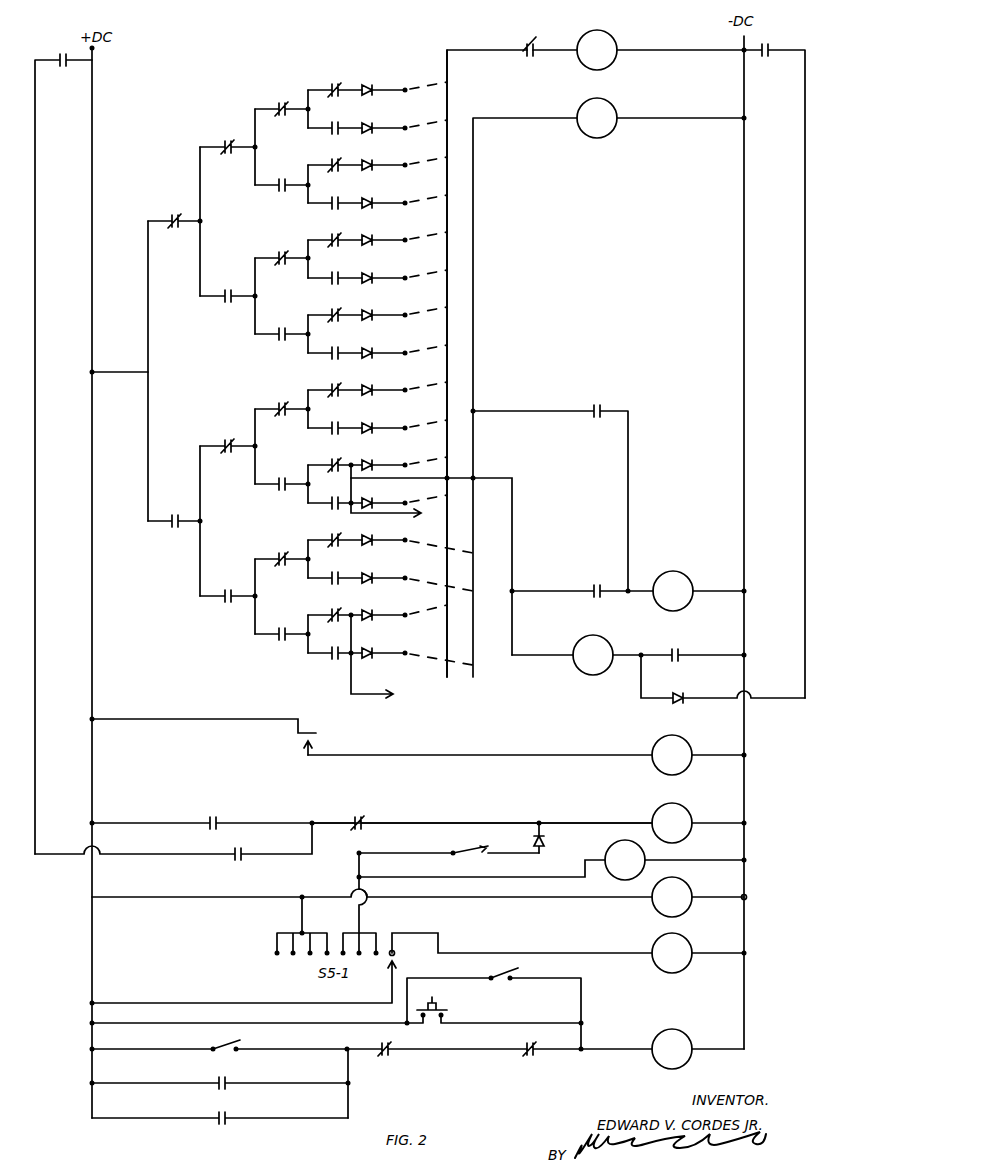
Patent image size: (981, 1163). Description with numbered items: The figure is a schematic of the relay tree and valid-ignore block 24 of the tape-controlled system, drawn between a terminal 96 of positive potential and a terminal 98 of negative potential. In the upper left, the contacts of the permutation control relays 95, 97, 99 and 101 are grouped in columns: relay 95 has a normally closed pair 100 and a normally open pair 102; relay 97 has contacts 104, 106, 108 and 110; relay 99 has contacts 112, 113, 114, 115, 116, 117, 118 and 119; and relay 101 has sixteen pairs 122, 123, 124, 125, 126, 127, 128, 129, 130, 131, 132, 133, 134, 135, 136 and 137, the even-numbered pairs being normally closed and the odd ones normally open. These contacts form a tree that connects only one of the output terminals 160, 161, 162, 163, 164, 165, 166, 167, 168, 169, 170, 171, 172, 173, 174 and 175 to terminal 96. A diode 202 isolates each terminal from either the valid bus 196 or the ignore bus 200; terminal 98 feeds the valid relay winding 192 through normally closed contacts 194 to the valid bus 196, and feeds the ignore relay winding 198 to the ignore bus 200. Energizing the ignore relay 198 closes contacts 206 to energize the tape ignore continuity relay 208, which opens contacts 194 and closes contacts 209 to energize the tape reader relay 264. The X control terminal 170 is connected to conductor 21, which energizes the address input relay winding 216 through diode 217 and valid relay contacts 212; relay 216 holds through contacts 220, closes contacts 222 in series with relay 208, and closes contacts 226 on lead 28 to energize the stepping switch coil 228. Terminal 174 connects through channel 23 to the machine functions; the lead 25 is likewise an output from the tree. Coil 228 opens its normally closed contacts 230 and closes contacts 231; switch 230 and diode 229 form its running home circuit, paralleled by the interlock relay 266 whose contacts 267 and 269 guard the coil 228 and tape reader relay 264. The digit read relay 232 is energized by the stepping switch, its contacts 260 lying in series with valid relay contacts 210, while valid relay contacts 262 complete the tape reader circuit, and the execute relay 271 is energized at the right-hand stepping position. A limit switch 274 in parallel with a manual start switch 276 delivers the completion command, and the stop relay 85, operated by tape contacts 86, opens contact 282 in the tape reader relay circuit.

The conductor 21 is at (514, 530).
The channel 23 is at (370, 698).
The valid-ignore block 24 is at (429, 41).
The output lead 25 is at (405, 518).
The lead 28 is at (428, 822).
The stop relay 85 is at (527, 755).
The switch contacts 86 is at (296, 740).
The permutation control relay 95 is at (176, 171).
The terminal 96 is at (94, 48).
The permutation control relay 97 is at (230, 103).
The terminal 98 is at (742, 42).
The permutation control relay 99 is at (284, 71).
The normally closed contacts 100 is at (174, 213).
The permutation control relay 101 is at (339, 45).
The normally open contacts 102 is at (174, 513).
The normally closed contacts 104 is at (227, 174).
The normally open contacts 106 is at (227, 288).
The normally closed contacts 108 is at (227, 474).
The normally open contacts 110 is at (227, 588).
The normally closed contacts 112 is at (281, 118).
The normally open contacts 113 is at (281, 177).
The normally closed contacts 114 is at (281, 267).
The normally open contacts 115 is at (281, 326).
The normally closed contacts 116 is at (281, 418).
The normally open contacts 117 is at (281, 476).
The normally closed contacts 118 is at (281, 568).
The normally open contacts 119 is at (281, 626).
The normally closed contacts 122 is at (377, 91).
The normally open contacts 123 is at (377, 121).
The normally closed contacts 124 is at (377, 166).
The normally open contacts 125 is at (377, 196).
The normally closed contacts 126 is at (377, 240).
The normally open contacts 127 is at (377, 271).
The normally closed contacts 128 is at (377, 316).
The normally open contacts 129 is at (377, 346).
The normally closed contacts 130 is at (377, 391).
The normally open contacts 131 is at (377, 421).
The normally closed contacts 132 is at (377, 466).
The normally open contacts 133 is at (377, 496).
The normally closed contacts 134 is at (390, 541).
The normally open contacts 135 is at (390, 574).
The normally closed contacts 136 is at (377, 616).
The normally open contacts 137 is at (390, 649).
The output terminal 160 is at (358, 91).
The output terminal 161 is at (358, 128).
The output terminal 162 is at (358, 165).
The output terminal 163 is at (358, 203).
The output terminal 164 is at (358, 240).
The output terminal 165 is at (358, 278).
The output terminal 166 is at (358, 315).
The output terminal 167 is at (358, 353).
The output terminal 168 is at (358, 390).
The output terminal 169 is at (358, 428).
The X control terminal 170 is at (358, 465).
The output terminal 171 is at (358, 503).
The output terminal 172 is at (358, 540).
The output terminal 173 is at (358, 578).
The output terminal 174 is at (358, 615).
The output terminal 175 is at (358, 653).
The valid relay winding 192 is at (660, 50).
The normally closed relay contacts 194 is at (529, 40).
The valid bus 196 is at (449, 92).
The ignore relay winding 198 is at (660, 118).
The ignore bus 200 is at (475, 176).
The diode 202 is at (375, 88).
The contacts 206 is at (599, 391).
The tape ignore continuity relay 208 is at (700, 591).
The contacts 209 is at (224, 1098).
The normally open contacts 210 is at (65, 444).
The normally open valid relay contacts 212 is at (774, 361).
The address input relay winding 216 is at (576, 655).
The diode 217 is at (680, 678).
The normally open contacts 220 is at (675, 647).
The normally open contacts 222 is at (599, 571).
The contacts 226 is at (215, 803).
The stepping switch coil 228 is at (699, 823).
The diode 229 is at (546, 846).
The normally closed contacts 230 is at (470, 850).
The normally open contacts 231 is at (222, 1040).
The digit read relay 232 is at (419, 897).
The contacts 260 is at (240, 834).
The contacts 262 is at (224, 1063).
The tape reader relay 264 is at (698, 1049).
The interlock relay 266 is at (552, 860).
The contacts 267 is at (358, 815).
The contacts 269 is at (387, 1029).
The execute relay 271 is at (418, 969).
The limit switch 274 is at (486, 970).
The manual start switch 276 is at (432, 996).
The contact 282 is at (532, 1029).